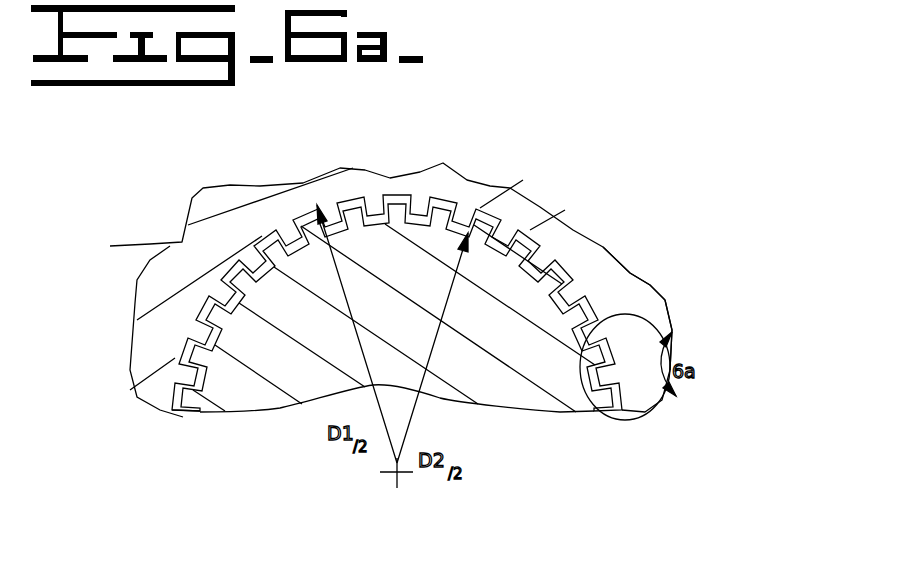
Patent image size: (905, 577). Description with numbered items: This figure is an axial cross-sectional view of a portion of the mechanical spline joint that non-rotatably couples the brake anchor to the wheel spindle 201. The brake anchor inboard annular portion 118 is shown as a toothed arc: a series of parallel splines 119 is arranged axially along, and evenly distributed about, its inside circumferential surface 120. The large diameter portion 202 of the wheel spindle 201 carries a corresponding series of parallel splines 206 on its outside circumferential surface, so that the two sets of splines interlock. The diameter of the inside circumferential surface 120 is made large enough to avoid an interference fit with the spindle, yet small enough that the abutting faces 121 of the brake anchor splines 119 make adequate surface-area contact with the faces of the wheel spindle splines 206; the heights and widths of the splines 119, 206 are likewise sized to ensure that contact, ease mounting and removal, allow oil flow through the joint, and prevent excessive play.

The brake anchor inboard annular portion 118 is at (575, 231).
The brake anchor splines 119 is at (503, 230).
The inside circumferential surface 120 is at (612, 293).
The abutting face 121 is at (655, 335).
The wheel spindle 201 is at (530, 431).
The large diameter portion 202 is at (200, 412).
The wheel spindle splines 206 is at (195, 300).